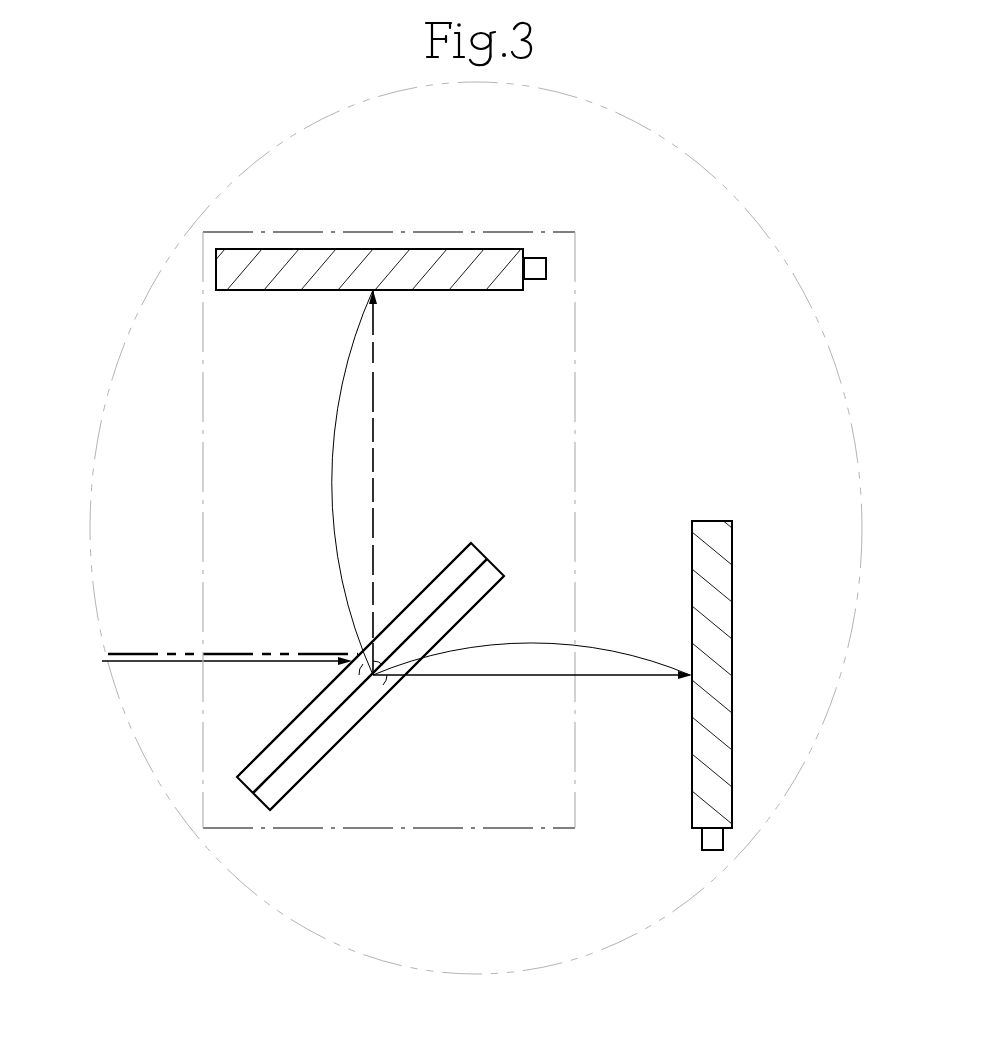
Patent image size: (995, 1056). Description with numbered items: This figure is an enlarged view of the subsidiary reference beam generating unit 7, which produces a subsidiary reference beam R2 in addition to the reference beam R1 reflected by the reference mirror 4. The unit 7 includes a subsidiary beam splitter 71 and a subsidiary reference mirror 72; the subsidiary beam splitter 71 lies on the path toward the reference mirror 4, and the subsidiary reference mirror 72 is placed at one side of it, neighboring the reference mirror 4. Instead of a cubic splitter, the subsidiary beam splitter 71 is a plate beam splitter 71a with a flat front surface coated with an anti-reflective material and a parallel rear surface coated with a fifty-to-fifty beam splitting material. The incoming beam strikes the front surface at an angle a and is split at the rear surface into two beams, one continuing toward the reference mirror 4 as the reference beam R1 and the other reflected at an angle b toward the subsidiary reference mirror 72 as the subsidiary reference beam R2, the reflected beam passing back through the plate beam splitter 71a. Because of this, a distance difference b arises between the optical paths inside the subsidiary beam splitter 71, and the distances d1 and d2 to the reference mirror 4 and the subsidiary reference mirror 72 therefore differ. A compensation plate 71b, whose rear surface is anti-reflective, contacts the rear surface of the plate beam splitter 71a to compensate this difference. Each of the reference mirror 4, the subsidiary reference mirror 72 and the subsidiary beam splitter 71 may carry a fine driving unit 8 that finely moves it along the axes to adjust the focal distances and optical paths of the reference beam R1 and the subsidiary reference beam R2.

The reference mirror 4 is at (731, 770).
The subsidiary reference beam generating unit 7 is at (322, 830).
The fine driving unit 8 is at (547, 266).
The subsidiary beam splitter 71 is at (101, 858).
The plate beam splitter 71a is at (238, 775).
The compensation plate 71b is at (272, 797).
The subsidiary reference mirror 72 is at (428, 249).
The reference beam R1 is at (627, 677).
The subsidiary reference beam R2 is at (373, 380).
The distance d1 is at (531, 650).
The distance d2 is at (344, 482).
The incident angle a is at (354, 677).
The distance difference b is at (385, 674).